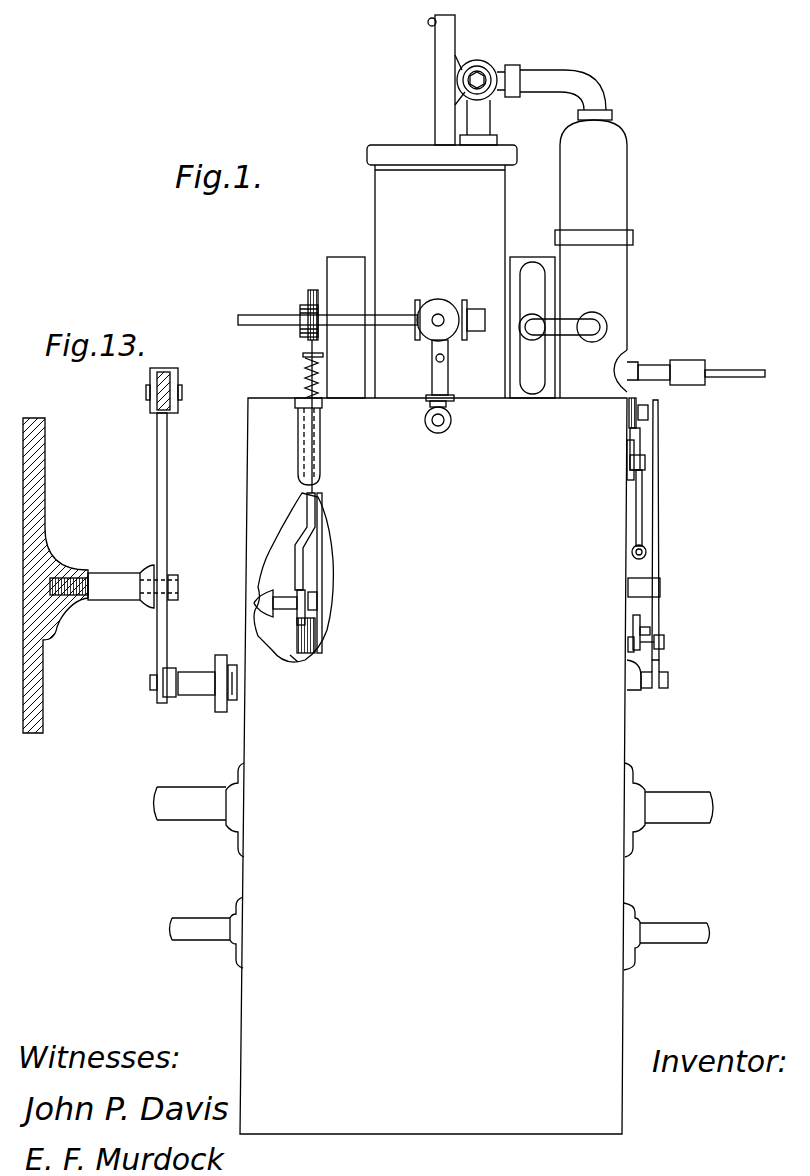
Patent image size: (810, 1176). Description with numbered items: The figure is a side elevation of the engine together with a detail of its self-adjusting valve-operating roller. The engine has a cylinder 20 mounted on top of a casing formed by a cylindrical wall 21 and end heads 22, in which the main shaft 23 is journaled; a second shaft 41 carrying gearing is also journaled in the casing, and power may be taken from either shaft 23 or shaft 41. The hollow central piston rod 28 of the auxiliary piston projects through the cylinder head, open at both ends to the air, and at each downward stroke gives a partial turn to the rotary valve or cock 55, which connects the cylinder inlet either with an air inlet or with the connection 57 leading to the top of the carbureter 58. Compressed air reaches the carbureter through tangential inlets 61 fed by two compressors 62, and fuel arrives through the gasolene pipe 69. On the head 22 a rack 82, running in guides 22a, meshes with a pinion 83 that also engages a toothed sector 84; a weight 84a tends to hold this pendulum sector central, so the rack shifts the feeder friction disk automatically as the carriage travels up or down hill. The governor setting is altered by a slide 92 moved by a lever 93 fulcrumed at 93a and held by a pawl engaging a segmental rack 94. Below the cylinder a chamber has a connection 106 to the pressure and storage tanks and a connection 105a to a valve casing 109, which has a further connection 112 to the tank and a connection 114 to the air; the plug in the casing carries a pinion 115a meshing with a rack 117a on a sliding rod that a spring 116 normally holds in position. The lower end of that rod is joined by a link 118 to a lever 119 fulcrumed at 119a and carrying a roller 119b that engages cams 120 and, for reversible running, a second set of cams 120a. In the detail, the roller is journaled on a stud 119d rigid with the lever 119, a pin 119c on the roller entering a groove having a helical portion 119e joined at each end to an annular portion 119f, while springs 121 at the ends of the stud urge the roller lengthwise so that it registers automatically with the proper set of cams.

In FIG. 1, the cylinder 20 is at (376, 208).
In FIG. 1, the cylindrical wall 21 is at (433, 766).
In FIG. 13, the end wall or head 22 is at (45, 478).
In FIG. 1, the guides 22a is at (646, 470).
In FIG. 1, the shaft 23 is at (195, 812).
In FIG. 1, the central piston rod 28 is at (436, 100).
In FIG. 1, the shaft 41 is at (197, 927).
In FIG. 1, the rotary valve or cock 55 is at (486, 68).
In FIG. 1, the connection 57 is at (560, 74).
In FIG. 1, the carbureter 58 is at (622, 196).
In FIG. 1, the inlets 61 is at (566, 322).
In FIG. 1, the compressors 62 is at (342, 272).
In FIG. 1, the gasolene pipe 69 is at (722, 367).
In FIG. 1, the rack 82 is at (634, 452).
In FIG. 1, the pinion 83 is at (641, 433).
In FIG. 1, the toothed sector 84 is at (649, 410).
In FIG. 1, the weight 84a is at (647, 552).
In FIG. 1, the slide 92 is at (641, 620).
In FIG. 1, the lever 93 is at (659, 522).
In FIG. 1, the fulcrum 93a is at (668, 676).
In FIG. 1, the segmental rack 94 is at (661, 586).
In FIG. 1, the third connection 105a is at (448, 384).
In FIG. 1, the connection 106 is at (452, 422).
In FIG. 1, the valve casing 109 is at (438, 305).
In FIG. 1, the second connection 112 is at (432, 355).
In FIG. 1, the third connection 114 is at (443, 326).
In FIG. 1, the pinion 115a is at (302, 326).
In FIG. 1, the spring 116 is at (304, 370).
In FIG. 1, the rack 117a is at (312, 292).
In FIG. 1, the link 118 is at (318, 505).
In FIG. 13, the link 118 is at (152, 400).
In FIG. 1, the lever 119 is at (292, 614).
In FIG. 13, the lever 119 is at (166, 538).
In FIG. 1, the fulcrum 119a is at (294, 600).
In FIG. 1, the roller 119b is at (318, 596).
In FIG. 13, the roller 119b is at (236, 700).
In FIG. 13, the pin 119c is at (218, 705).
In FIG. 13, the stud 119d is at (228, 672).
In FIG. 13, the helical portion 119e is at (192, 672).
In FIG. 13, the transverse annular portion 119f is at (168, 698).
In FIG. 1, the cams 120 is at (315, 630).
In FIG. 1, the cams 120a is at (292, 658).
In FIG. 13, the springs 121 is at (167, 670).